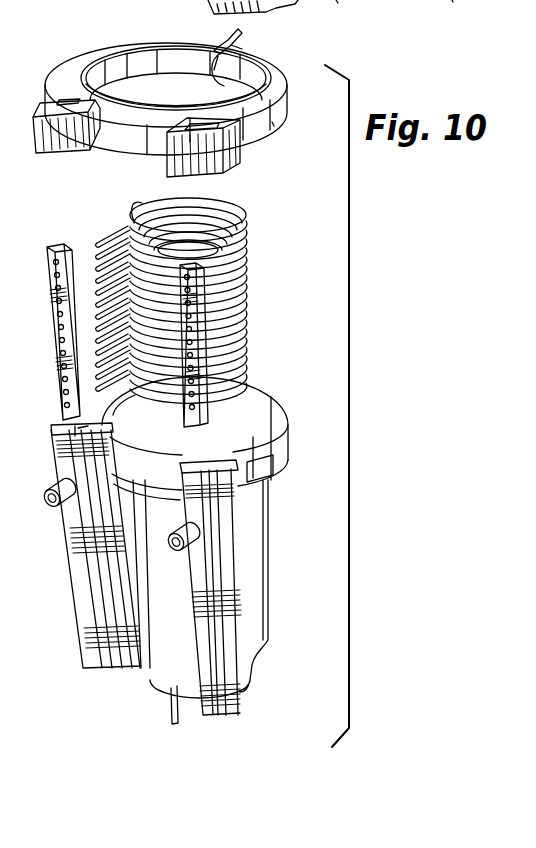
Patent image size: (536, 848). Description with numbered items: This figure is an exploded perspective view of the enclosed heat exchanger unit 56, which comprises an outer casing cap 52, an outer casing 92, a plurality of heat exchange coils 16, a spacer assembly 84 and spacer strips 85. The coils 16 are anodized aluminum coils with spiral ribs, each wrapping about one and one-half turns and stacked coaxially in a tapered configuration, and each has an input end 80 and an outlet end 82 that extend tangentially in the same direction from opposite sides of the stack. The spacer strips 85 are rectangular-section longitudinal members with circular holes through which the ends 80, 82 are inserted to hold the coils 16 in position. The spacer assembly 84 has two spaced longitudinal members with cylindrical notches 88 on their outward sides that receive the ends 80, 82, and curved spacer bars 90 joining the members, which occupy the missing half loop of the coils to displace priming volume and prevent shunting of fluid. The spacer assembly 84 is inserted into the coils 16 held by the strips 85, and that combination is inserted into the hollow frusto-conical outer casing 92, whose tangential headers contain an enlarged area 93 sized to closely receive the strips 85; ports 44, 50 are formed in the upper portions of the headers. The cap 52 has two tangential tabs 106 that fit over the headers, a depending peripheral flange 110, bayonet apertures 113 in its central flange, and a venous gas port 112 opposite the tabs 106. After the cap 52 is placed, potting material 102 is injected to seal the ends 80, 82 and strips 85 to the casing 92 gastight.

The heat exchange coil 16 is at (216, 289).
The port 44 is at (60, 508).
The port 50 is at (168, 548).
The outer casing cap 52 is at (182, 100).
The enclosed heat exchanger unit 56 is at (177, 363).
The input end 80 is at (118, 228).
The outlet end 82 is at (70, 447).
The spacer assembly 84 is at (160, 316).
The spacer strip 85 is at (55, 345).
The cylindrical notch 88 is at (455, 0).
The spacer bar 90 is at (140, 215).
The outer casing 92 is at (245, 548).
The enlarged area 93 is at (283, 3).
The potting material 102 is at (362, 0).
The tab 106 is at (253, 184).
The depending flange 110 is at (276, 130).
The venous gas port 112 is at (216, 30).
The bayonet aperture 113 is at (283, 80).